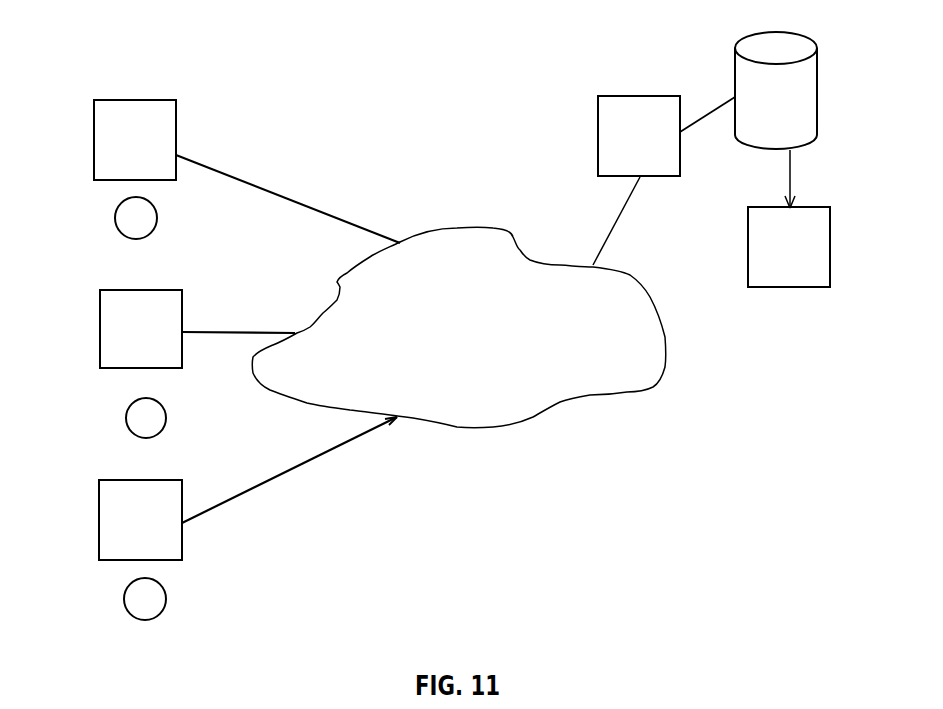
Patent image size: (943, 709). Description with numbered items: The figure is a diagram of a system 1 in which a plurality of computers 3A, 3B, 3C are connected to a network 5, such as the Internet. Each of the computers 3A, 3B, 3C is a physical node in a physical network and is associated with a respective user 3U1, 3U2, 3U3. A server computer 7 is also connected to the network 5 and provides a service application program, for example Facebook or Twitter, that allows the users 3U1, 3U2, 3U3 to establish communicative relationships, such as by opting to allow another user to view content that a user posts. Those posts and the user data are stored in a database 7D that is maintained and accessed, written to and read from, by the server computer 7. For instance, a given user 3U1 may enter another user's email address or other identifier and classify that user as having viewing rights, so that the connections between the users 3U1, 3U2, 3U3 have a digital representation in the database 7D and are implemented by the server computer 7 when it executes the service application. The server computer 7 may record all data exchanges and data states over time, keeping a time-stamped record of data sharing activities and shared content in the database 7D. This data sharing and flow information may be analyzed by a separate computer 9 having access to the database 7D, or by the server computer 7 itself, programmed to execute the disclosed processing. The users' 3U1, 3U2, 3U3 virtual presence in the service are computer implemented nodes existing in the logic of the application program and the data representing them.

The system 1 is at (342, 63).
The computer 3A is at (94, 141).
The computer 3B is at (100, 332).
The computer 3C is at (99, 527).
The user 3U1 is at (152, 232).
The user 3U2 is at (166, 422).
The user 3U3 is at (165, 604).
The network 5 is at (563, 398).
The server computer 7 is at (617, 95).
The database 7D is at (743, 148).
The separate computer 9 is at (792, 287).